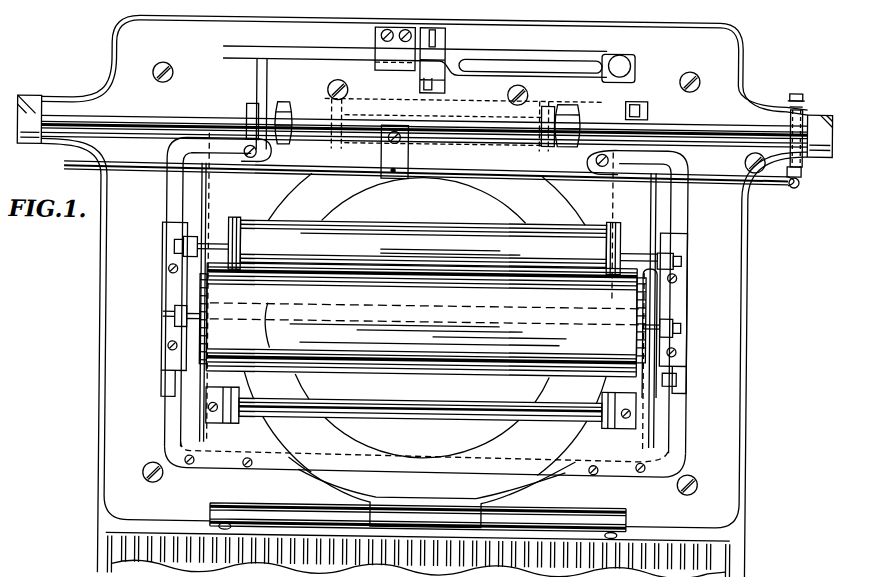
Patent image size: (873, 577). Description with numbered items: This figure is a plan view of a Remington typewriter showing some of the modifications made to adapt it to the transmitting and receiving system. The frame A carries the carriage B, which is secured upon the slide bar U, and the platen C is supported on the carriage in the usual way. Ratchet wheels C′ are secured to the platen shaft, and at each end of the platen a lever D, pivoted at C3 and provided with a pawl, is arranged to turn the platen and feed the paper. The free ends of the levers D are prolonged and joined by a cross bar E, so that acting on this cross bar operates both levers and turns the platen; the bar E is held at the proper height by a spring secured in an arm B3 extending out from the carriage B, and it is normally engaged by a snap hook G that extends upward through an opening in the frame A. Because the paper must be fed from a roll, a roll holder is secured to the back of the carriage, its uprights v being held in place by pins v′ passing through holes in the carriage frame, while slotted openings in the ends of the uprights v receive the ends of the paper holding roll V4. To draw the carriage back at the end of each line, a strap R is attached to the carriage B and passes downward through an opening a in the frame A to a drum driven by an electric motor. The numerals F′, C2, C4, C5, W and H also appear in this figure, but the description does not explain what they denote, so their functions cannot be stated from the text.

The frame A is at (107, 380).
The slide bar U is at (728, 124).
The front rail F′ is at (146, 164).
The cross bar E is at (711, 184).
The strap R is at (618, 108).
The opening a is at (637, 105).
The pins v′ is at (256, 156).
The arm B3 is at (402, 161).
The snap hook G is at (577, 181).
The uprights v is at (208, 186).
The feed roller C4 is at (299, 179).
The platen C is at (613, 378).
The paper holding roll V4 is at (263, 281).
The lever D is at (197, 276).
The ratchet wheels C′ is at (200, 333).
The bolt C2 is at (680, 320).
The pivot C3 is at (433, 410).
The roller bearing C5 is at (226, 439).
The carriage B is at (670, 415).
The spring arms W is at (522, 478).
The key levers H is at (117, 555).